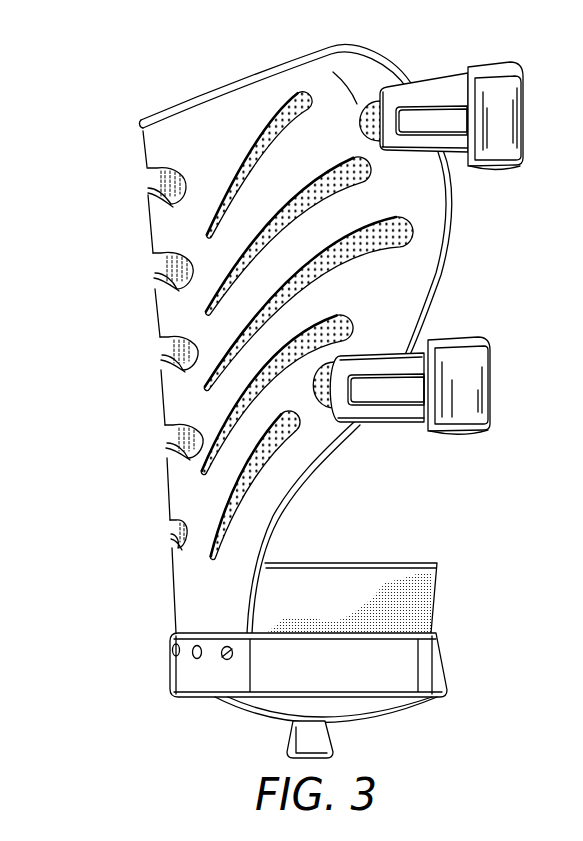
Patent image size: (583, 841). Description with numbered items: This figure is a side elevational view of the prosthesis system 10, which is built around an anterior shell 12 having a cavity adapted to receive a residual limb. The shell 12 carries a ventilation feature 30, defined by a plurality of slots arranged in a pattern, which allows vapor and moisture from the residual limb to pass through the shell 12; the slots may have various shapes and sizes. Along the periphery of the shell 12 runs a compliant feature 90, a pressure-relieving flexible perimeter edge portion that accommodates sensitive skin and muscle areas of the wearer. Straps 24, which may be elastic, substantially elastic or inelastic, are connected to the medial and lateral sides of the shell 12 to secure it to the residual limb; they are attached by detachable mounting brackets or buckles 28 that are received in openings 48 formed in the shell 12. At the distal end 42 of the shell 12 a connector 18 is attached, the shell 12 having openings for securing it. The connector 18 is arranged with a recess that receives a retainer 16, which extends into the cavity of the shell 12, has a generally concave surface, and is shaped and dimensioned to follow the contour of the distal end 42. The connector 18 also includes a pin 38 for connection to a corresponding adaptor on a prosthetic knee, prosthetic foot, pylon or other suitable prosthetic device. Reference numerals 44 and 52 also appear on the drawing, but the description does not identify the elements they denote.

The prosthesis system 10 is at (124, 497).
The anterior shell 12 is at (318, 433).
The retainer 16 is at (415, 602).
The connector 18 is at (423, 667).
The straps 24 is at (467, 383).
The buckles 28 is at (423, 120).
The ventilation feature 30 is at (410, 231).
The pin 38 is at (317, 742).
The distal end 42 is at (213, 598).
The hooks 44 is at (157, 266).
The openings 48 is at (303, 75).
The fastener holes 52 is at (215, 666).
The compliant feature 90 is at (150, 122).